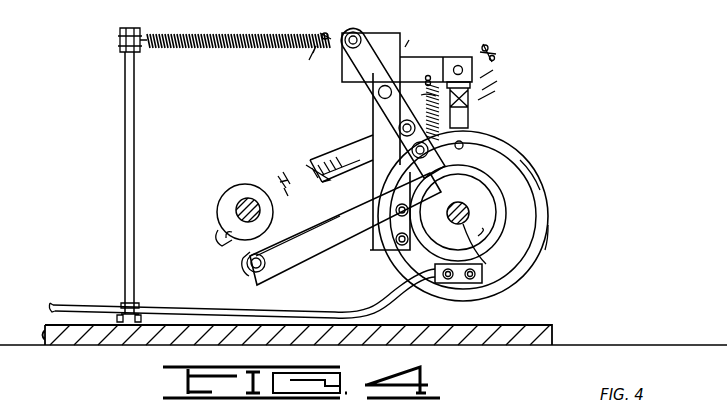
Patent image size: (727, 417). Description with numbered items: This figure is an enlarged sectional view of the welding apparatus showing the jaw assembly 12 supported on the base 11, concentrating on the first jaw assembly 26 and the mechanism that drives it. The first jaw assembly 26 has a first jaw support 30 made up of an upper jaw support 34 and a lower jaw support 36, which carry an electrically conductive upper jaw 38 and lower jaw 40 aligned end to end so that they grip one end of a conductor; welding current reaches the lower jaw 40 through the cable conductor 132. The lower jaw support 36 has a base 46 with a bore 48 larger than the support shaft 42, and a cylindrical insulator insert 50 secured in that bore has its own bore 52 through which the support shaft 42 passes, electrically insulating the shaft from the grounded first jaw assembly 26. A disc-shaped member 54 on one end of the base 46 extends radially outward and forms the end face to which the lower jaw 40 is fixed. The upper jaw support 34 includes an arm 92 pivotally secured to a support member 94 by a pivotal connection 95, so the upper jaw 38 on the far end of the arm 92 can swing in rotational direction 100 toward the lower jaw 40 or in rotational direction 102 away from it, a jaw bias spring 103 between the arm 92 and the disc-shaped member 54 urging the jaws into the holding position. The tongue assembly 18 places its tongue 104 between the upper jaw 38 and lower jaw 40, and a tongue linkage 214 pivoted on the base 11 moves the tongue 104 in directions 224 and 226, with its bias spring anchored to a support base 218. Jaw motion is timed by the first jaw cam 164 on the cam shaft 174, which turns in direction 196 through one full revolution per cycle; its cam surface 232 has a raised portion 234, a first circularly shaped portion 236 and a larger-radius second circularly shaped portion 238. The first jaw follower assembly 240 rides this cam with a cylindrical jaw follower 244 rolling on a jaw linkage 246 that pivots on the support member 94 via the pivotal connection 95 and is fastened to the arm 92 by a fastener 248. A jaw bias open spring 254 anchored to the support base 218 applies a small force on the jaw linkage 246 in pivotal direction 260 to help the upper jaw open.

The base 11 is at (492, 338).
The jaw assembly 12 is at (478, 46).
The tongue assembly 18 is at (360, 132).
The first jaw assembly 26 is at (486, 77).
The first jaw support 30 is at (551, 231).
The upper jaw support 34 is at (406, 48).
The lower jaw support 36 is at (522, 141).
The upper jaw 38 is at (443, 82).
The lower jaw 40 is at (469, 118).
The support shaft 42 is at (512, 272).
The base 46 is at (506, 218).
The bore 48 is at (516, 236).
The insulator insert 50 is at (478, 190).
The bore 52 is at (469, 208).
The disc-shaped member 54 is at (534, 180).
The arm 92 is at (387, 64).
The support member 94 is at (378, 177).
The pivotal connection 95 is at (377, 93).
The rotational direction 100 is at (492, 46).
The rotational direction 102 is at (496, 58).
The jaw bias spring 103 is at (421, 96).
The tongue 104 is at (445, 90).
The cable conductor 132 is at (88, 305).
The first jaw cam 164 is at (238, 192).
The cam shaft 174 is at (243, 208).
The direction 196 is at (280, 176).
The tongue linkage 214 is at (333, 142).
The support base 218 is at (124, 97).
The direction 224 is at (490, 90).
The direction 226 is at (480, 100).
The cam surface 232 is at (231, 198).
The raised portion 234 is at (246, 259).
The first circularly shaped portion 236 is at (275, 229).
The second circularly shaped portion 238 is at (218, 224).
The first jaw follower assembly 240 is at (295, 265).
The jaw follower 244 is at (244, 265).
The jaw linkage 246 is at (325, 232).
The fastener 248 is at (352, 31).
The jaw bias open spring 254 is at (262, 42).
The pivotal direction 260 is at (324, 33).